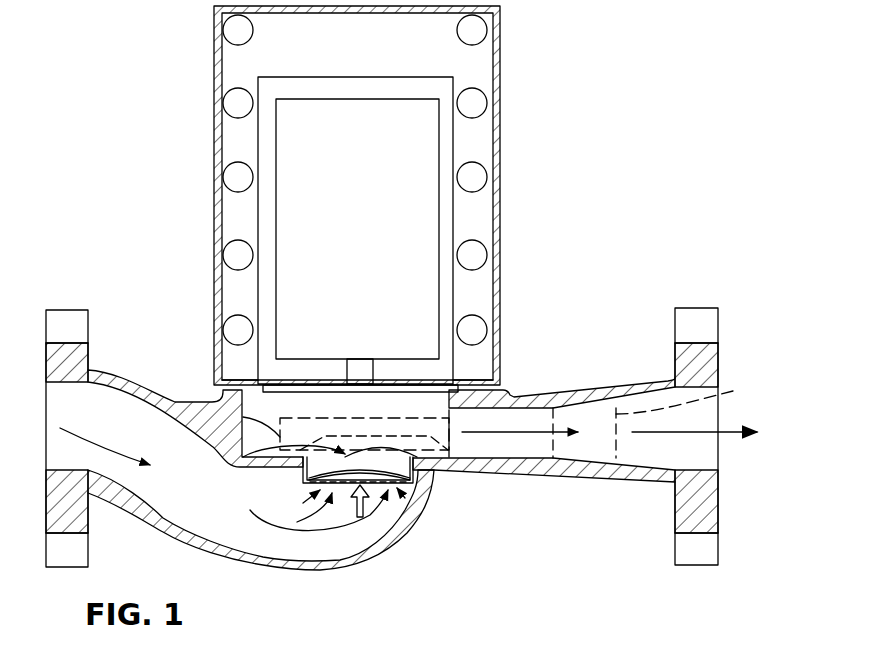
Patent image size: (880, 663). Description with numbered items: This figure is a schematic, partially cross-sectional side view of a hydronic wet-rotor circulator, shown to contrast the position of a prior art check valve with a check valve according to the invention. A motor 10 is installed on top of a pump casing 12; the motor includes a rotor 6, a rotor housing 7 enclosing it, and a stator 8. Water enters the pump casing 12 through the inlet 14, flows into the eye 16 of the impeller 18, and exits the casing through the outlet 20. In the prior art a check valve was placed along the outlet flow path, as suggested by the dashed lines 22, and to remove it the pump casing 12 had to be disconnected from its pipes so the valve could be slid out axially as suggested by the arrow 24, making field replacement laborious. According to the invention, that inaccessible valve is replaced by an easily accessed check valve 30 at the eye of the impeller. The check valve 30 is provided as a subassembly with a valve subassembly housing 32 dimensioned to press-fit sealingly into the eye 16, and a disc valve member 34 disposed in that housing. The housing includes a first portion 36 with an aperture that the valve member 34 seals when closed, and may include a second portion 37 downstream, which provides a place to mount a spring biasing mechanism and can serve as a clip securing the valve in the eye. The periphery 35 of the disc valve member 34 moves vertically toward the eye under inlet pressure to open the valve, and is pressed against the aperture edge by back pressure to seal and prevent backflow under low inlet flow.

The rotor 6 is at (397, 113).
The rotor housing 7 is at (305, 77).
The stator 8 is at (237, 27).
The motor 10 is at (477, 72).
The pump casing 12 is at (570, 392).
The inlet 14 is at (107, 380).
The eye 16 is at (470, 466).
The impeller 18 is at (234, 417).
The outlet 20 is at (627, 460).
The dashed lines 22 is at (740, 385).
The arrow 24 is at (670, 433).
The check valve 30 is at (435, 500).
The valve subassembly housing 32 is at (303, 479).
The valve member 34 is at (427, 475).
The periphery 35 is at (427, 497).
The first portion 36 is at (321, 504).
The second portion 37 is at (232, 457).